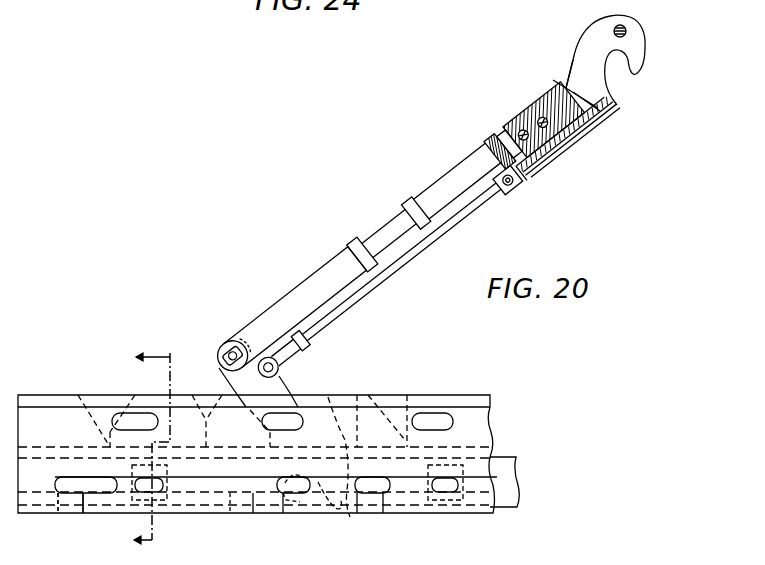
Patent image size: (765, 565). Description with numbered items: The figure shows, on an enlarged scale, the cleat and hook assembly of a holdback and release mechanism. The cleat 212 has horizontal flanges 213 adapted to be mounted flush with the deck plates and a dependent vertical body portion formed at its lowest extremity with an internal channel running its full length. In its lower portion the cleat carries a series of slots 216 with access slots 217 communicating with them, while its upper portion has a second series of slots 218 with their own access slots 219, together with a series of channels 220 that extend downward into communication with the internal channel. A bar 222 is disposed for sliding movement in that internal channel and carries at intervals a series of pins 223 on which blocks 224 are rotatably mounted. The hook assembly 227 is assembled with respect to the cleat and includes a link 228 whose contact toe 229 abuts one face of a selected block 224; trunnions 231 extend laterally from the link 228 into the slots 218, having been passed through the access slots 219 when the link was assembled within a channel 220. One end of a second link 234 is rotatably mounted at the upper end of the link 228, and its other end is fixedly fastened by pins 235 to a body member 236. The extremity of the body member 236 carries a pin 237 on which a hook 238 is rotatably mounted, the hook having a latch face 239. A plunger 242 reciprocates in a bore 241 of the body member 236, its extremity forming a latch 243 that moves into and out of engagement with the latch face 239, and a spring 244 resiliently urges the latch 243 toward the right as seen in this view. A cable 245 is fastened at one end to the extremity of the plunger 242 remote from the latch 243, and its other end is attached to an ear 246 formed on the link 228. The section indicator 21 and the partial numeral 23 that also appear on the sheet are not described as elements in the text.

The cleat 212 is at (480, 420).
The horizontal flanges 213 is at (475, 397).
The slots 216 is at (105, 490).
The access slots 217 is at (55, 505).
The second series of slots 218 is at (438, 427).
The access slots 219 is at (407, 395).
The channels 220 is at (90, 393).
The bar 222 is at (513, 488).
The pins 223 is at (292, 490).
The blocks 224 is at (304, 493).
The hook assembly 227 is at (383, 233).
The link 228 is at (330, 397).
The contact toe 229 is at (344, 517).
The trunnions 231 is at (291, 421).
The link 234 is at (309, 285).
The pins 235 is at (540, 121).
The body member 236 is at (543, 119).
The pin 237 is at (624, 26).
The hook 238 is at (641, 40).
The latch face 239 is at (558, 86).
The bore 241 is at (593, 130).
The plunger 242 is at (567, 138).
The latch 243 is at (609, 105).
The spring 244 is at (547, 174).
The cable 245 is at (442, 232).
The ear 246 is at (280, 358).
The section line 21 is at (134, 449).
The hook head 23 is at (578, 74).